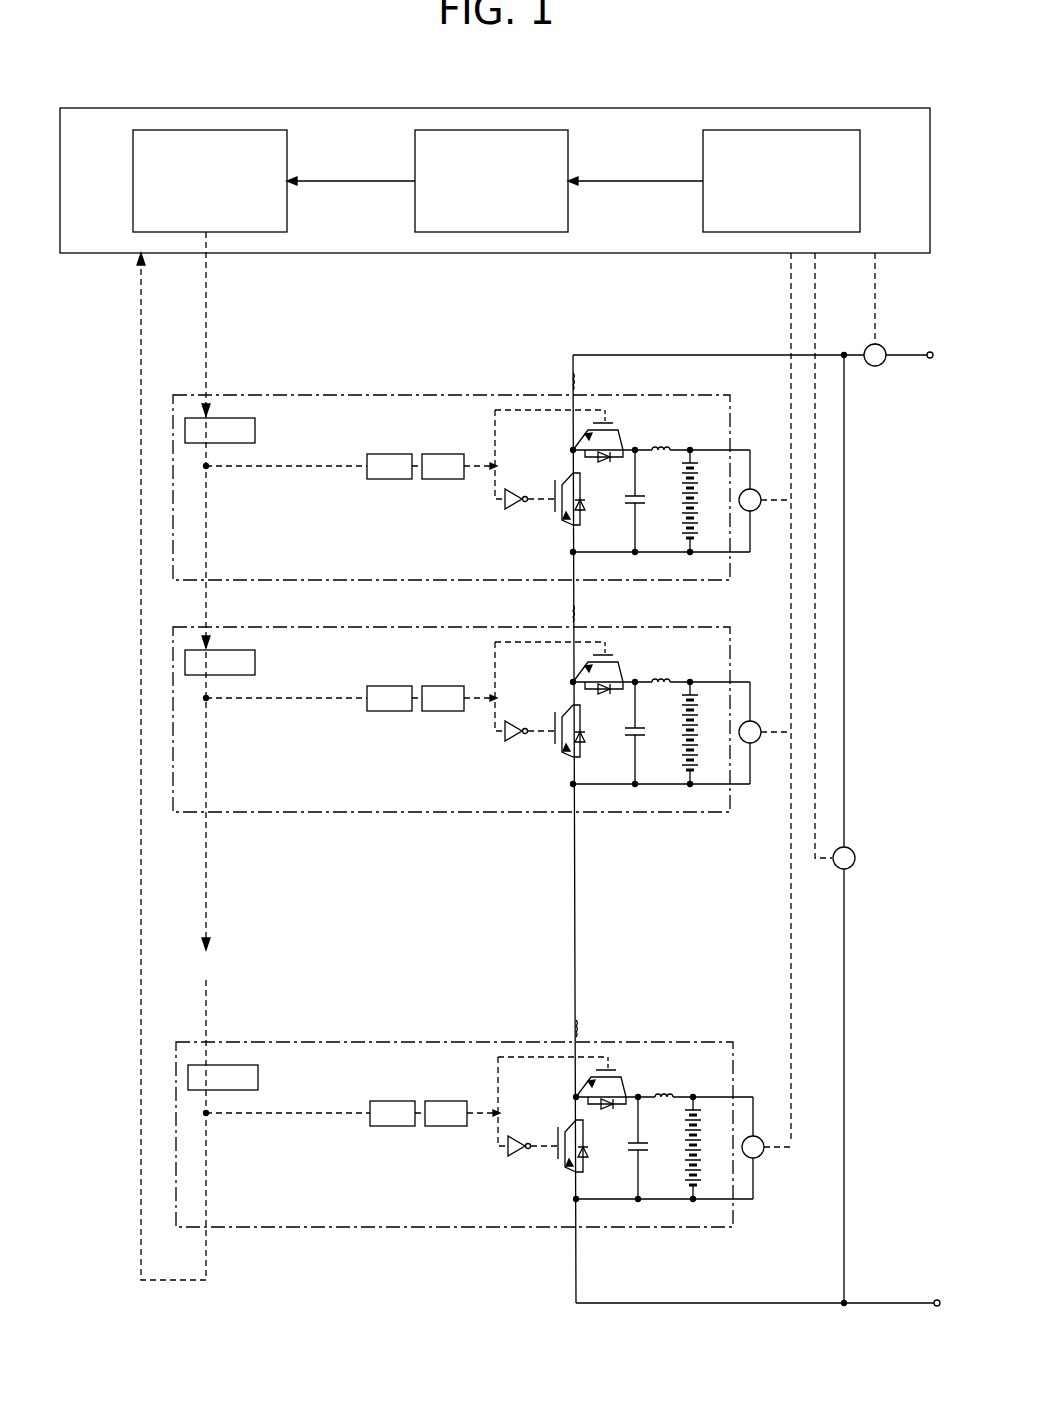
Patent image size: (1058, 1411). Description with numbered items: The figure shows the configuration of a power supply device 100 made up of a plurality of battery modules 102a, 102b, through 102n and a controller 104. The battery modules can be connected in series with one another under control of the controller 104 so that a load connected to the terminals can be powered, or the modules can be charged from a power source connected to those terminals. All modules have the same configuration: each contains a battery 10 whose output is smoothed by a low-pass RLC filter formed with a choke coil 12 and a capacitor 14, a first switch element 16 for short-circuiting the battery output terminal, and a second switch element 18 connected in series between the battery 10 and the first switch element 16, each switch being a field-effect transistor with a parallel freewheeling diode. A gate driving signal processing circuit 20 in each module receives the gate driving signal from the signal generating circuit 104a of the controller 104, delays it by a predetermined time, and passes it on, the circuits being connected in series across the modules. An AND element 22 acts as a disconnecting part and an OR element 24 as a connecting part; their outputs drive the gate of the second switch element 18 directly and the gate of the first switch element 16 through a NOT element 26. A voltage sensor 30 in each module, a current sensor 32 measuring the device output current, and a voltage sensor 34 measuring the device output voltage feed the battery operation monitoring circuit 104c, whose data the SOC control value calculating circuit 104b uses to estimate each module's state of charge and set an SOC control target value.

The power supply device 100 is at (526, 1361).
The battery module 102a is at (720, 395).
The battery module 102b is at (720, 627).
The battery module 102n is at (723, 1042).
The controller 104 is at (858, 108).
The signal generating circuit 104a is at (288, 134).
The SOC control value calculating circuit 104b is at (569, 143).
The battery operation monitoring circuit 104c is at (861, 143).
The battery 10 is at (698, 494).
The choke coil 12 is at (660, 446).
The capacitor 14 is at (641, 495).
The first switch element 16 is at (560, 521).
The second switch element 18 is at (617, 429).
The gate driving signal processing circuit 20 is at (256, 430).
The AND element 22 is at (372, 454).
The OR element 24 is at (424, 454).
The NOT element 26 is at (505, 508).
The voltage sensor 30 is at (756, 490).
The current sensor 32 is at (880, 345).
The voltage sensor 34 is at (850, 848).